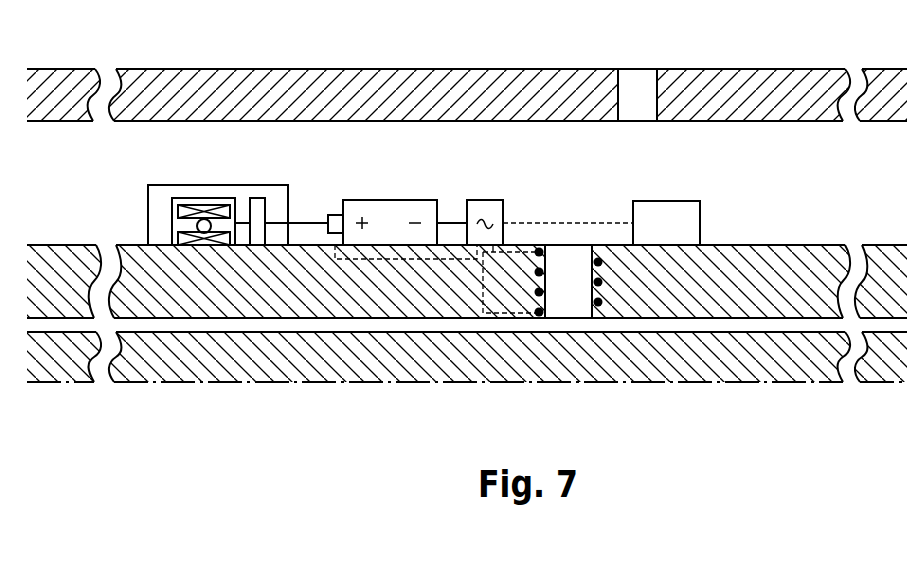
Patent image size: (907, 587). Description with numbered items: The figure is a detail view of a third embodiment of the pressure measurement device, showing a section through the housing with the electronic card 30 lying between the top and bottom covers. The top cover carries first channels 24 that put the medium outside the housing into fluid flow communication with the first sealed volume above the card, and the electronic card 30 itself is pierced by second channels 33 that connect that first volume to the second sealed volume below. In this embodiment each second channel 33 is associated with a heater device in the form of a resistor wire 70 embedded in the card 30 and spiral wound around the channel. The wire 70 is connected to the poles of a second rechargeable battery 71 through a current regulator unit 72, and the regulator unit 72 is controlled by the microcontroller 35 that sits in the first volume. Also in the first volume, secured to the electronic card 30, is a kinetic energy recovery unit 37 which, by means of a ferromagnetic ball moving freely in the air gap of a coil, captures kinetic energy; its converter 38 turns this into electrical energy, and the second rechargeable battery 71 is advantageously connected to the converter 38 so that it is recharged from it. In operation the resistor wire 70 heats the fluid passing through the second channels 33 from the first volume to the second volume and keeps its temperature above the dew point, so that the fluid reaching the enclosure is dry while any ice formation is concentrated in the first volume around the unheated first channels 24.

The first channel 24 is at (622, 97).
The electronic card 30 is at (775, 264).
The second channel 33 is at (572, 253).
The microcontroller 35 is at (668, 206).
The kinetic energy recovery unit 37 is at (190, 186).
The converter 38 is at (257, 196).
The resistor wire 70 is at (601, 258).
The second rechargeable battery 71 is at (400, 205).
The current regulator unit 72 is at (483, 205).